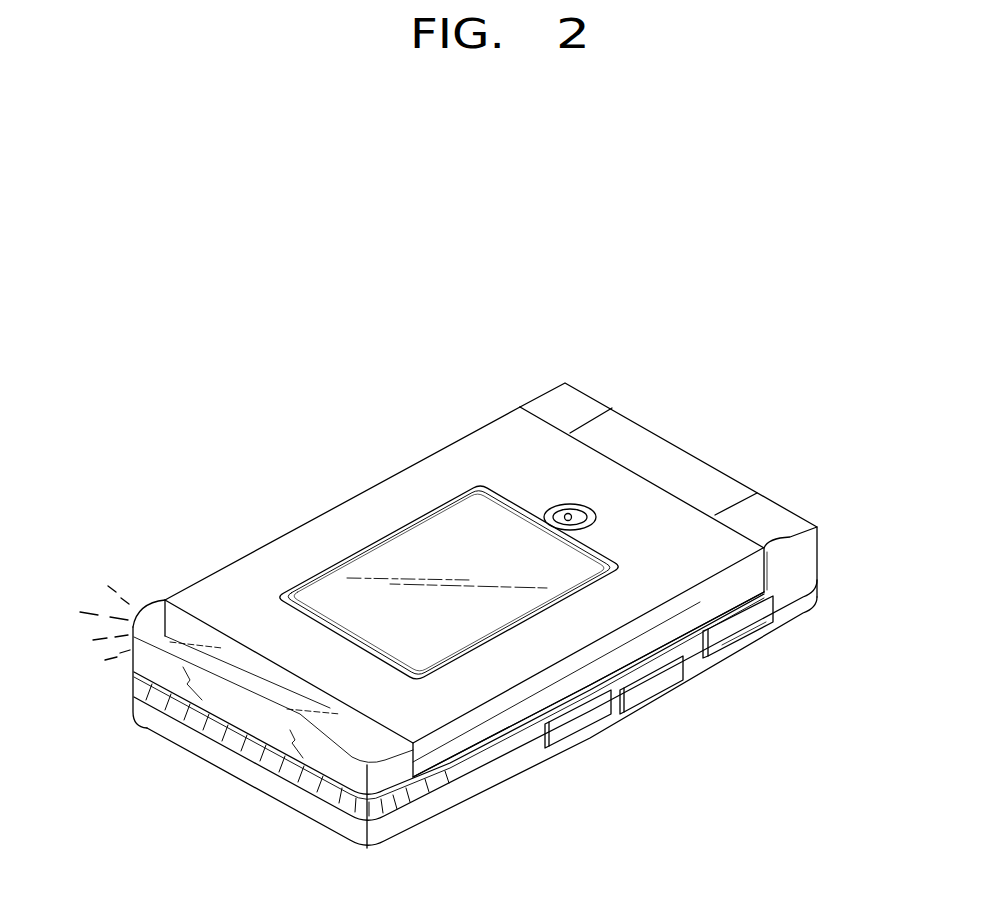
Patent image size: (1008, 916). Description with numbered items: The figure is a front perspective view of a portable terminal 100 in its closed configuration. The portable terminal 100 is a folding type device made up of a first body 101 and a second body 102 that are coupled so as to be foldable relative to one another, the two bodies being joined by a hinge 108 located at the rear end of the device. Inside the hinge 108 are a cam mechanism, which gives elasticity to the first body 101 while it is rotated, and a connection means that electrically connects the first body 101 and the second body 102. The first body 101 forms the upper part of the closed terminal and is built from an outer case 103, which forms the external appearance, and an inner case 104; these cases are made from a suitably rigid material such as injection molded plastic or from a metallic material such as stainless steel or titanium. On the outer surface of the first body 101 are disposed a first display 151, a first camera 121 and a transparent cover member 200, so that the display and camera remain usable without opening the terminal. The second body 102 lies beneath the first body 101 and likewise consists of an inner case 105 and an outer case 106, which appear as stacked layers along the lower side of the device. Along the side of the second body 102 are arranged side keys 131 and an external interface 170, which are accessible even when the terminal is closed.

The portable terminal 100 is at (290, 443).
The first body 101 is at (200, 562).
The second body 102 is at (123, 683).
The outer case 103 is at (507, 720).
The inner case 104 is at (520, 747).
The inner case 105 is at (443, 777).
The outer case 106 is at (415, 810).
The hinge 108 is at (737, 485).
The first camera 121 is at (562, 505).
The side keys 131 is at (587, 723).
The first display 151 is at (455, 520).
The external interface 170 is at (736, 633).
The transparent cover member 200 is at (160, 611).